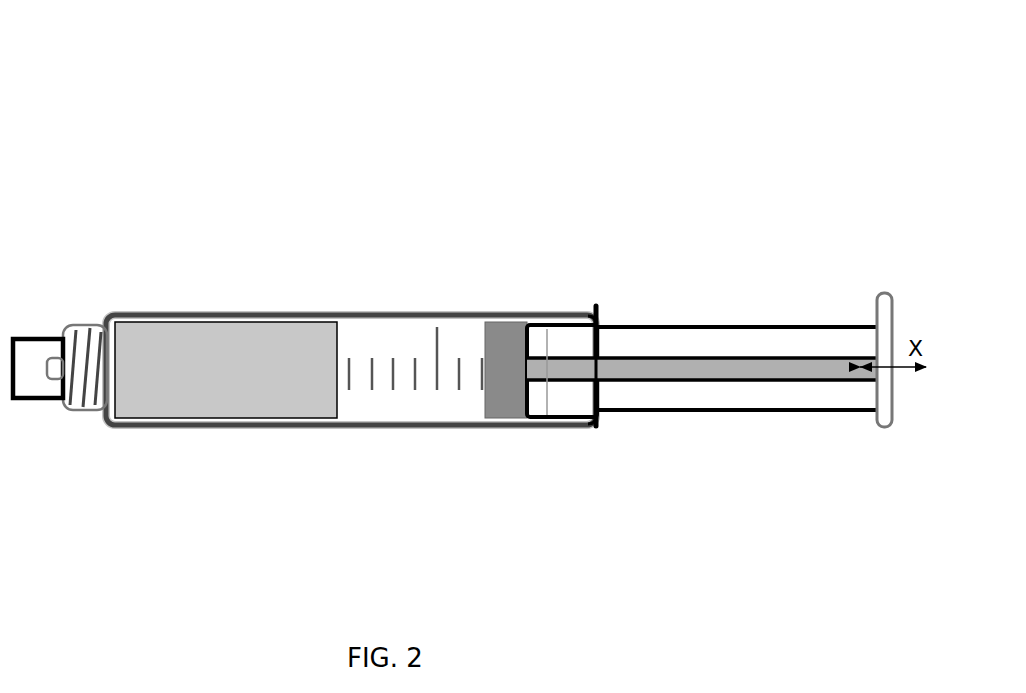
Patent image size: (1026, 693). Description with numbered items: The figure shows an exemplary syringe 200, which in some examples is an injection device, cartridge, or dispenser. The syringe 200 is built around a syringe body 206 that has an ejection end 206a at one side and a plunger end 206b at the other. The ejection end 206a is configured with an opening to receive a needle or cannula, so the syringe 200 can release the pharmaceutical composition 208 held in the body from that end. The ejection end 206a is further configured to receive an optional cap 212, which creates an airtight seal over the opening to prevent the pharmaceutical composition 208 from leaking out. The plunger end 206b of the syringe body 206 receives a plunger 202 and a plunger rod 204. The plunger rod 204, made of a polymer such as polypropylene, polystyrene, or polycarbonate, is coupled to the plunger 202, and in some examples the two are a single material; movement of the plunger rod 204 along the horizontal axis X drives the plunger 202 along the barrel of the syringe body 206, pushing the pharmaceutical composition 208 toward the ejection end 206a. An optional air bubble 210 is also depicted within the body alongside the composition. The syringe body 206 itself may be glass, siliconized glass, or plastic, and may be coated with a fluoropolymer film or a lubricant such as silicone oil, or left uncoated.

The syringe 200 is at (127, 107).
The plunger 202 is at (511, 337).
The plunger rod 204 is at (731, 336).
The syringe body 206 is at (296, 312).
The ejection end 206a is at (103, 388).
The plunger end 206b is at (602, 395).
The pharmaceutical composition 208 is at (226, 370).
The air bubble 210 is at (402, 372).
The cap 212 is at (38, 334).